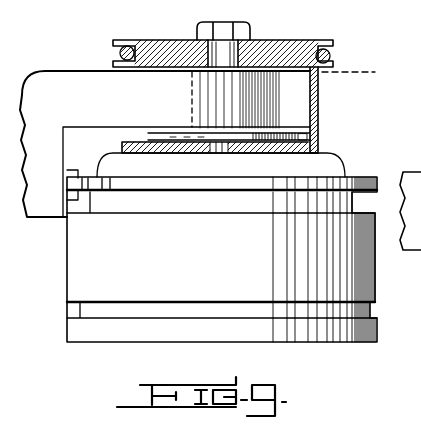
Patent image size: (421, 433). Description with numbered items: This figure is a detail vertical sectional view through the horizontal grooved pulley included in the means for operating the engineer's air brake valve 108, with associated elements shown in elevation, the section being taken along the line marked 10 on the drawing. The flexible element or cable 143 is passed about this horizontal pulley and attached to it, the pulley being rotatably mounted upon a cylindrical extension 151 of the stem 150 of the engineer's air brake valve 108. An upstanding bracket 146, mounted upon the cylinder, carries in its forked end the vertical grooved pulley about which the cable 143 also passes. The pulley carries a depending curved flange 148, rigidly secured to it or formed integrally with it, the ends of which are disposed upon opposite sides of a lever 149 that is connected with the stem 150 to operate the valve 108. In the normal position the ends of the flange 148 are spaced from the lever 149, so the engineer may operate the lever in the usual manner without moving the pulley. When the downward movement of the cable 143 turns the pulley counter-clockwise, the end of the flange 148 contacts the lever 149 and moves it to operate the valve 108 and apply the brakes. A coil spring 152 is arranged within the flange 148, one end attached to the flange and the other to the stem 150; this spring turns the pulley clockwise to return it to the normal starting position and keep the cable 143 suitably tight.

The section line 10- 10 is at (378, 77).
The engineer's air brake valve 108 is at (222, 247).
The flexible element or cable 143 is at (333, 58).
The upstanding bracket 146 is at (316, 48).
The depending curved flange 148 is at (318, 103).
The lever 149 is at (165, 144).
The stem 150 is at (318, 146).
The cylindrical extension 151 is at (252, 36).
The coil spring 152 is at (318, 128).